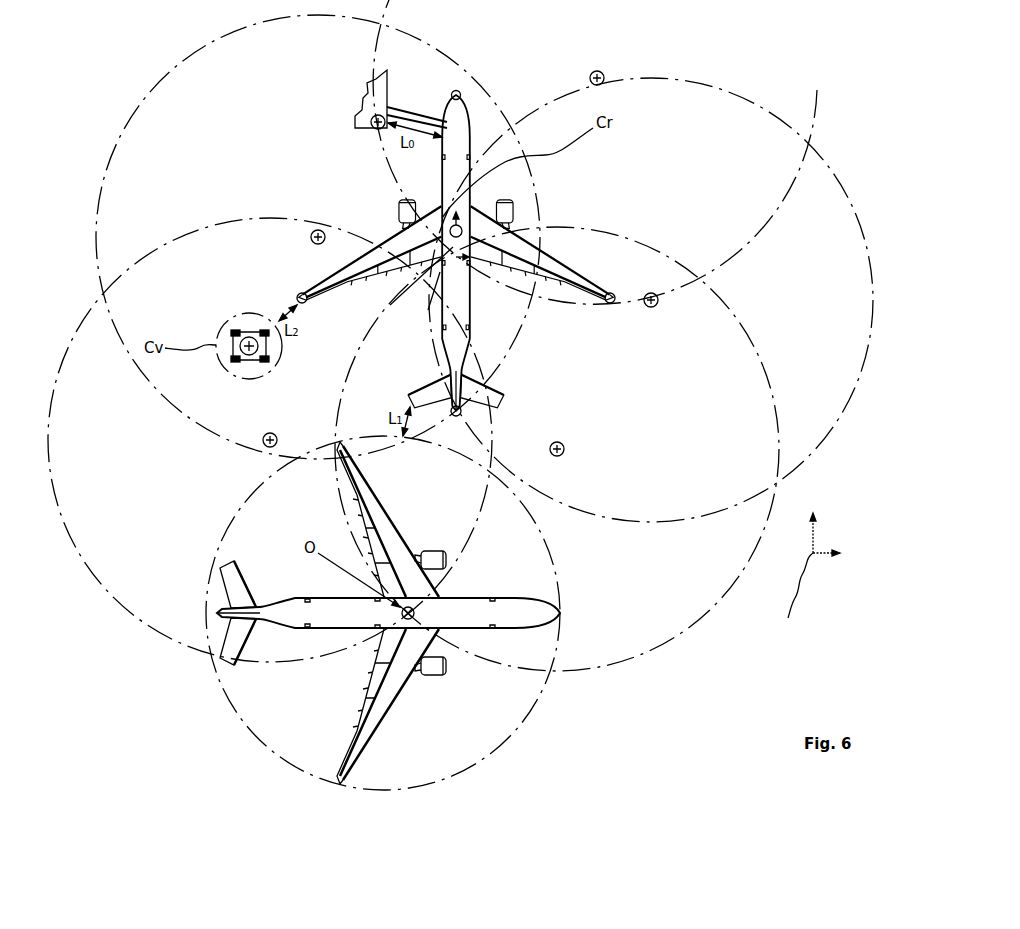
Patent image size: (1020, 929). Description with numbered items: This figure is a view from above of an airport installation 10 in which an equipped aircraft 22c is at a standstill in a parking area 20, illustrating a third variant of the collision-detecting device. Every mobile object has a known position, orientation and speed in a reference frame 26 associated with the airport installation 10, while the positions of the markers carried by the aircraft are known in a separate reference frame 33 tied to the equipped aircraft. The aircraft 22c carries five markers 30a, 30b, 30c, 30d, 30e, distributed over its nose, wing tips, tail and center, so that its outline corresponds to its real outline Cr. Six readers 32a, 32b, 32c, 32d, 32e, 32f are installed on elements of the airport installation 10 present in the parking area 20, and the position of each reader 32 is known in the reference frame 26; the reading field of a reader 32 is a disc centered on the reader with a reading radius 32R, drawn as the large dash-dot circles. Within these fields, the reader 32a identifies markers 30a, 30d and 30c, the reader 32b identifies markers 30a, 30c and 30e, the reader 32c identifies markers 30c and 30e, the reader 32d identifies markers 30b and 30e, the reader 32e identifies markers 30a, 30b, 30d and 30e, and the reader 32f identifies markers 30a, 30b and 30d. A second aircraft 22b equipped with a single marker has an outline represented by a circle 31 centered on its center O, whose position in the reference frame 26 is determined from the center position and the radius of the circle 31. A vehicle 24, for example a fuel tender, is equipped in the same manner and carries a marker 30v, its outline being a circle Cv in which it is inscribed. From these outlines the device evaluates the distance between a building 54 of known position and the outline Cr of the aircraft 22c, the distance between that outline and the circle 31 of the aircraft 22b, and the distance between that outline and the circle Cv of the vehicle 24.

The airport installation 10 is at (826, 519).
The parking area 20 is at (476, 232).
The equipped aircraft 22b is at (460, 706).
The equipped aircraft 22c is at (551, 252).
The vehicle 24 is at (248, 362).
The reference frame 26 is at (793, 595).
The marker 30a is at (454, 224).
The marker 30b is at (310, 305).
The marker 30c is at (607, 305).
The marker 30d is at (458, 90).
The marker 30e is at (455, 420).
The marker 30v is at (248, 333).
The circle 31 is at (546, 688).
The reader 32 is at (416, 610).
The reader 32a is at (605, 78).
The reader 32b is at (658, 306).
The reader 32c is at (565, 450).
The reader 32d is at (263, 446).
The reader 32e is at (311, 237).
The reader 32f is at (371, 118).
The reading radius 32R is at (125, 127).
The reference frame 33 is at (421, 285).
The building 54 is at (372, 86).